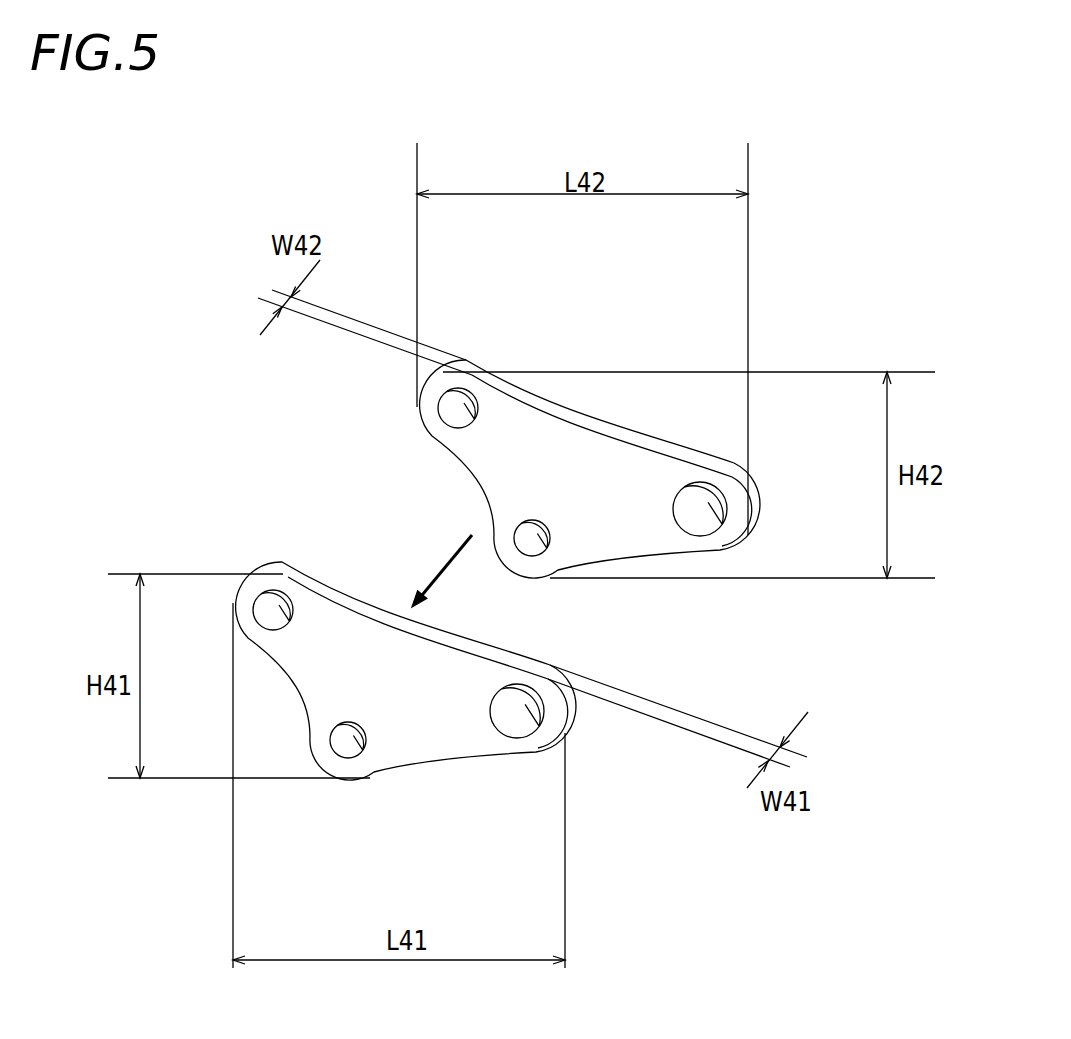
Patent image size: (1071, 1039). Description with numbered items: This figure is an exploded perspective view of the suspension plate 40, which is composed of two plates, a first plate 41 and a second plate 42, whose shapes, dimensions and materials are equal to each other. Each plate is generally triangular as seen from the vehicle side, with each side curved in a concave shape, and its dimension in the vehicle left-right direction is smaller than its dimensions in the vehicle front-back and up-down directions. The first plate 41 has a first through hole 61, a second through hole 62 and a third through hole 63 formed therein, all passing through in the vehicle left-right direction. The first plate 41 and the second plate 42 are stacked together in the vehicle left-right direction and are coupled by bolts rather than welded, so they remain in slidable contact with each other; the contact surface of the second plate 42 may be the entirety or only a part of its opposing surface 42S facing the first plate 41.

The suspension plate 40 is at (185, 195).
The first plate 41 is at (322, 590).
The second plate 42 is at (440, 433).
The opposing surface 42S is at (563, 465).
The first through hole 61 is at (442, 410).
The second through hole 62 is at (518, 548).
The third through hole 63 is at (735, 540).